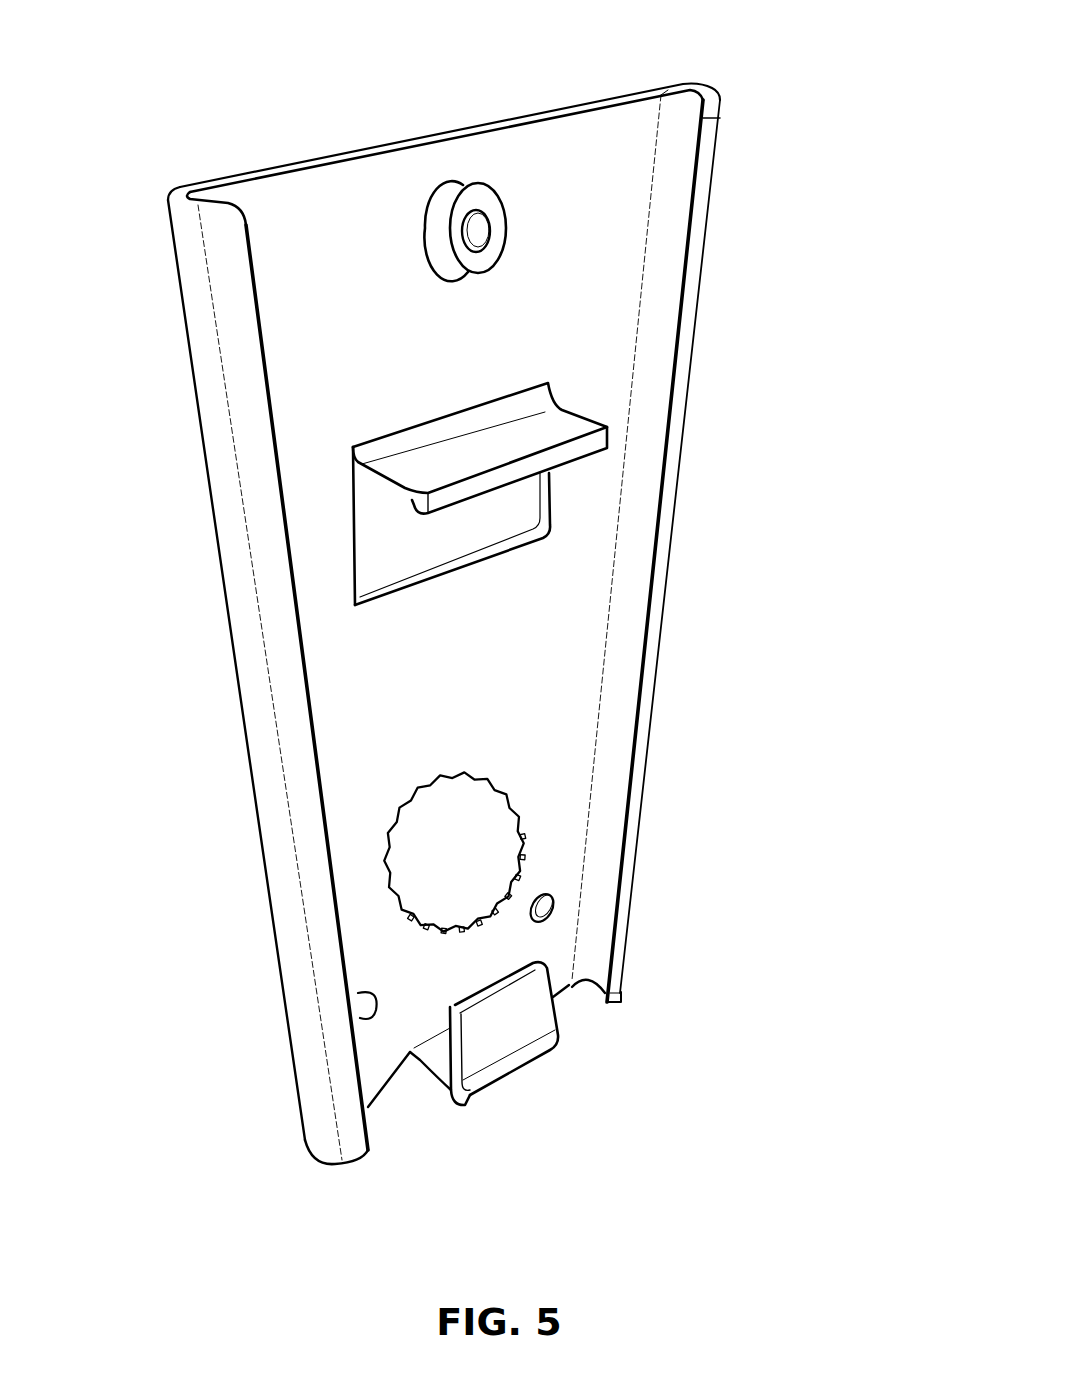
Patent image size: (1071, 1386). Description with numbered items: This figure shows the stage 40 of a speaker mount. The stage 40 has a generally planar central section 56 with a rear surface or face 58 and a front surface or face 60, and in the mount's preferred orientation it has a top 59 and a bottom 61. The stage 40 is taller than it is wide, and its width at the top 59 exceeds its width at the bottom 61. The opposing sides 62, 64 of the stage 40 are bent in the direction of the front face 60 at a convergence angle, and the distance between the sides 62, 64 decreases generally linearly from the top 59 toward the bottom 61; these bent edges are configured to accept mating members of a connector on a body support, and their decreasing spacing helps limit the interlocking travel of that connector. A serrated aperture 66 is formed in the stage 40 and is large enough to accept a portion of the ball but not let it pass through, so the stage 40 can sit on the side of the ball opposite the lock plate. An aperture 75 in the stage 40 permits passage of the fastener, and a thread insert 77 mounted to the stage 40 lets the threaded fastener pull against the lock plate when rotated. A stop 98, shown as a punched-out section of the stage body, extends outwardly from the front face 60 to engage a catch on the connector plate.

The stage 40 is at (730, 360).
The central section 56 is at (592, 585).
The rear surface 58 is at (287, 155).
The top 59 is at (606, 56).
The front surface 60 is at (432, 172).
The bottom 61 is at (400, 1158).
The side 62 is at (667, 517).
The side 64 is at (287, 670).
The serrated aperture 66 is at (485, 828).
The aperture 75 is at (520, 220).
The thread insert 77 is at (488, 252).
The stop 98 is at (570, 428).